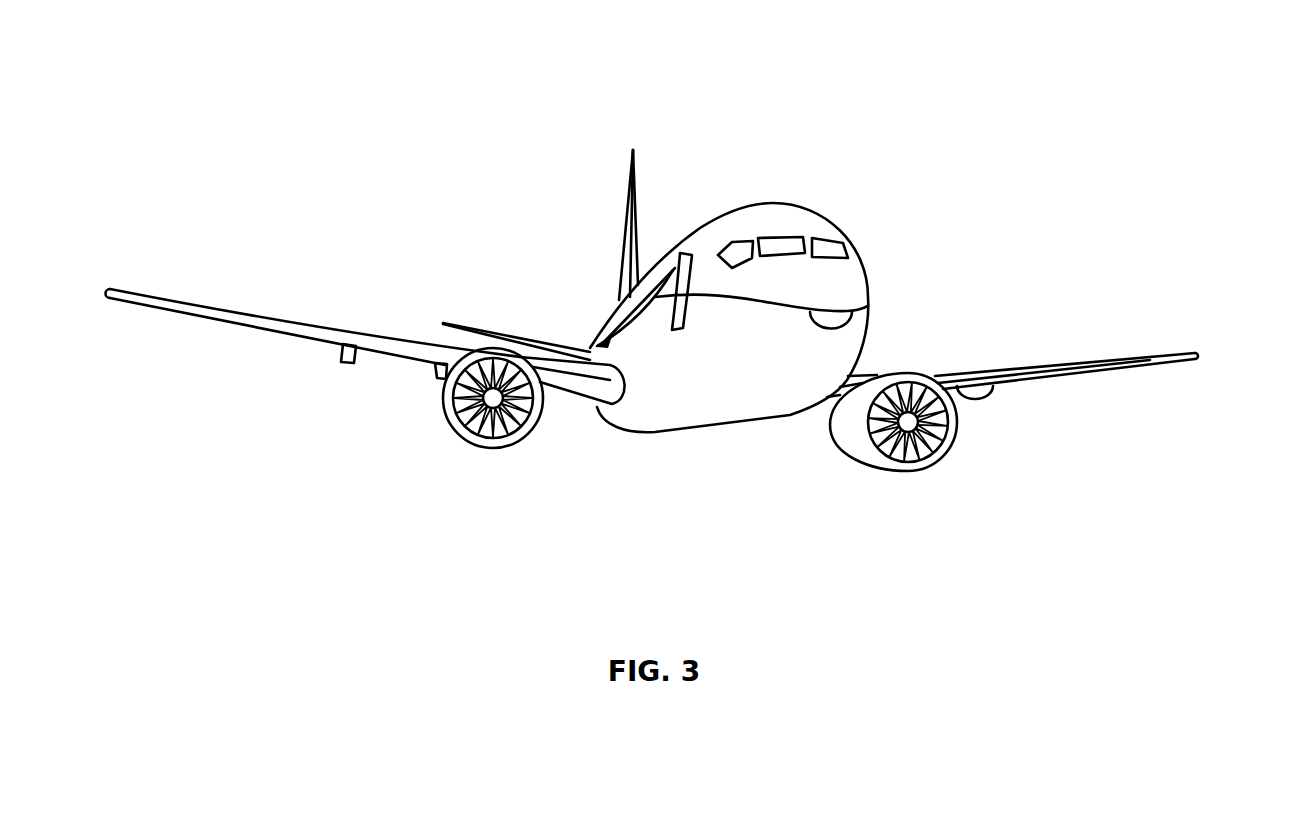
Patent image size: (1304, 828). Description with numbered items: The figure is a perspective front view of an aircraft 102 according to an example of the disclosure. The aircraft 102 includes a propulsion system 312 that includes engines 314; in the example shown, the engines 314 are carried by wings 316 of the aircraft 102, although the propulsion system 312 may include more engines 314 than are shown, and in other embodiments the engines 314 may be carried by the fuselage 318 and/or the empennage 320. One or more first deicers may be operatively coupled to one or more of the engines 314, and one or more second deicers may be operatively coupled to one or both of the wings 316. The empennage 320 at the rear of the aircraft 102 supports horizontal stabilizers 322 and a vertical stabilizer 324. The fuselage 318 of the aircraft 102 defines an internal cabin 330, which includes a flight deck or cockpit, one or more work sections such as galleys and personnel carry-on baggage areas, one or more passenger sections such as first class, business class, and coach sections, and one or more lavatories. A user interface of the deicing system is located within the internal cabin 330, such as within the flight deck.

The aircraft 102 is at (381, 94).
The propulsion system 312 is at (348, 425).
The engines 314 is at (487, 447).
The wings 316 is at (253, 317).
The fuselage 318 is at (866, 268).
The empennage 320 is at (620, 305).
The horizontal stabilizers 322 is at (483, 330).
The vertical stabilizer 324 is at (628, 193).
The internal cabin 330 is at (783, 241).